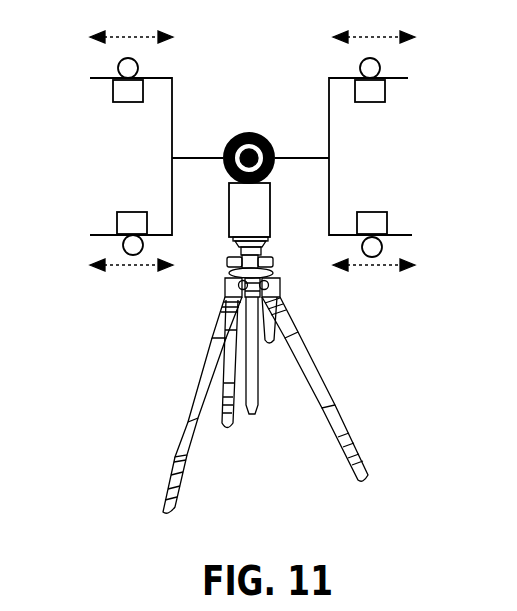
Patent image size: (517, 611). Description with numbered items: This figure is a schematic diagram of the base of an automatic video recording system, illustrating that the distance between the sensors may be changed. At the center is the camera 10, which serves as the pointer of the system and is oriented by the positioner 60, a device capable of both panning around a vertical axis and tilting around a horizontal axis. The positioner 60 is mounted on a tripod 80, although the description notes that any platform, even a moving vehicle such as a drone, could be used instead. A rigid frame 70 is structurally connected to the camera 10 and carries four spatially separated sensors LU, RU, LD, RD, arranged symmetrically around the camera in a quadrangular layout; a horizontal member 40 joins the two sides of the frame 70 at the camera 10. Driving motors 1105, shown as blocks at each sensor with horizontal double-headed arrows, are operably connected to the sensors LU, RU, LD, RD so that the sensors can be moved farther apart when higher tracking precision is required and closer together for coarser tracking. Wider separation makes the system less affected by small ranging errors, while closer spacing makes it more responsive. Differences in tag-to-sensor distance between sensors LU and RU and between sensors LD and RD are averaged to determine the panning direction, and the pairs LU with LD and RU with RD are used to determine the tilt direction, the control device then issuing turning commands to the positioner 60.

The camera 10 is at (252, 133).
The horizontal rail 40 is at (312, 156).
The positioner 60 is at (262, 220).
The frame 70 is at (171, 137).
The tripod 80 is at (303, 347).
The driving motors 1105 is at (112, 88).
The left upper sensor LU is at (119, 66).
The right upper sensor RU is at (380, 70).
The left lower sensor LD is at (123, 243).
The right lower sensor RD is at (382, 248).